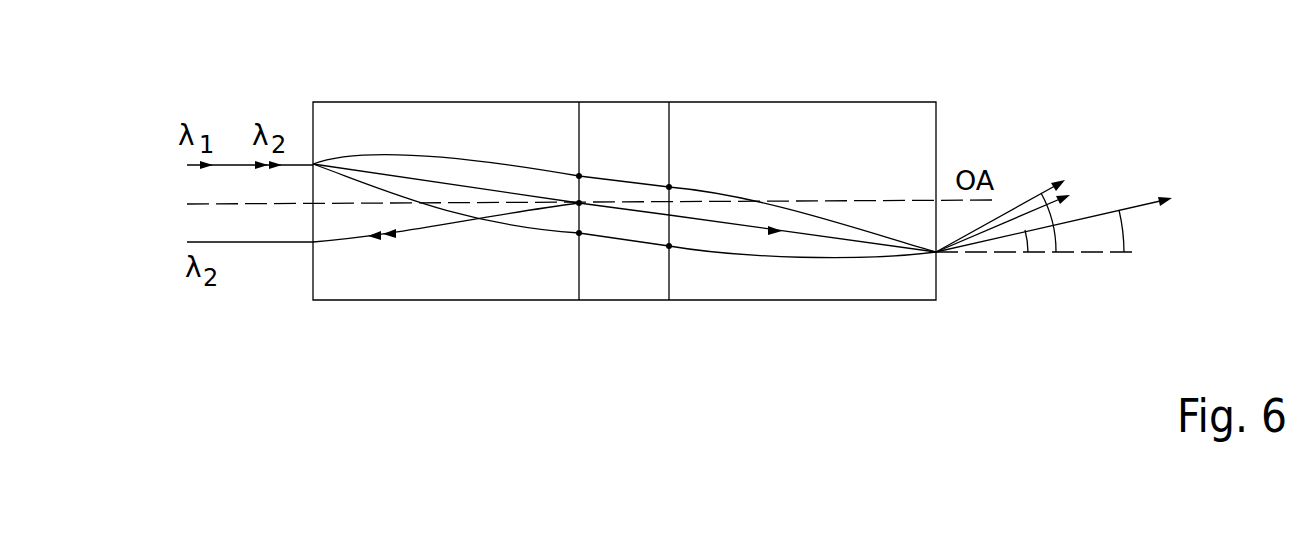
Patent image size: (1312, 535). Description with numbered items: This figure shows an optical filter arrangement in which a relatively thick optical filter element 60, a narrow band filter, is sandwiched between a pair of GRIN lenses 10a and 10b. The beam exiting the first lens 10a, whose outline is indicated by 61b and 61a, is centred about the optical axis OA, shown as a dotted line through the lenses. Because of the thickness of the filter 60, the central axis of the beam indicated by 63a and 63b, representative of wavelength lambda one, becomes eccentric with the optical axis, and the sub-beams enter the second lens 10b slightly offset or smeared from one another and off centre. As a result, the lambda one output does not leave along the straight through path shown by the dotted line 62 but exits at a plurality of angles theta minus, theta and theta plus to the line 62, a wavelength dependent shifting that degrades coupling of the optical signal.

The GRIN lens 10a is at (437, 290).
The GRIN lens 10b is at (792, 292).
The optical filter element 60 is at (607, 107).
The beam outline 61a is at (579, 233).
The beam outline 61b is at (579, 176).
The beam central axis indicator 63a is at (669, 187).
The beam central axis indicator 63b is at (669, 246).
The straight through path line 62 is at (1042, 253).